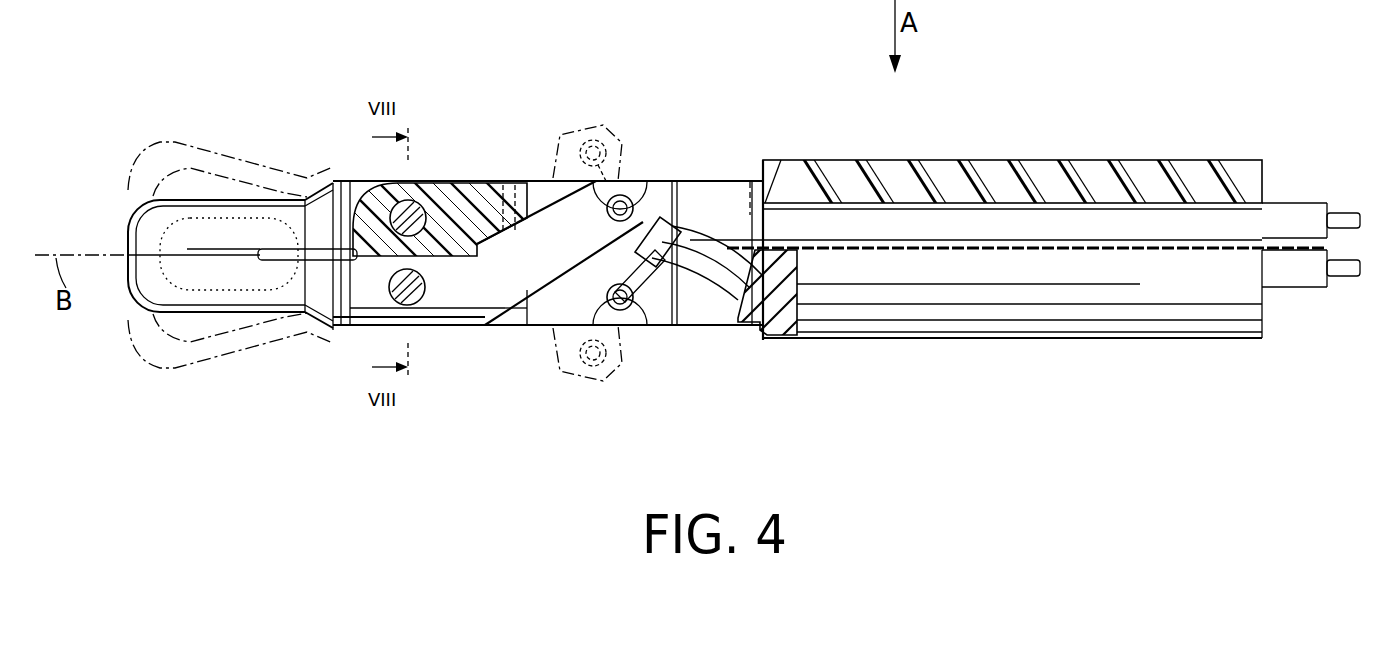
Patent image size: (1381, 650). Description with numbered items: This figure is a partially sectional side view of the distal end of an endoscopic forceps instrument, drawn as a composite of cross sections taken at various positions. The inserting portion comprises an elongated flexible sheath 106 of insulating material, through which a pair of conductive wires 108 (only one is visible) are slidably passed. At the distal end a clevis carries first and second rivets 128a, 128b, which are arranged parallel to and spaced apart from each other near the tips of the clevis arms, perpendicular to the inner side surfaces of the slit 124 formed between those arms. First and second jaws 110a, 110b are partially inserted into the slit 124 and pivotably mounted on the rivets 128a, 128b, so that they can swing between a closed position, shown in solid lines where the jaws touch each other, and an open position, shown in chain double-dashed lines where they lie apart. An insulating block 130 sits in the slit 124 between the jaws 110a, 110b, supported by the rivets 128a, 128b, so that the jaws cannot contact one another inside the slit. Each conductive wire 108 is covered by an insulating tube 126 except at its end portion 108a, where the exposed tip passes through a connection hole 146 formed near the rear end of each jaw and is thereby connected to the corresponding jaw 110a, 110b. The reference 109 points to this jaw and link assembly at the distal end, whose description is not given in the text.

The flexible sheath 106 is at (1085, 172).
The conductive wire 108 is at (735, 195).
The end portion of conductive wire 108a is at (653, 215).
The jaw drive mechanism 109 is at (568, 98).
The first jaw 110a is at (210, 297).
The second jaw 110b is at (197, 208).
The slit 124 is at (668, 326).
The insulating tube 126 is at (1297, 210).
The first rivet 128a is at (415, 297).
The second rivet 128b is at (423, 212).
The insulating block 130 is at (457, 217).
The connection hole 146 is at (608, 180).